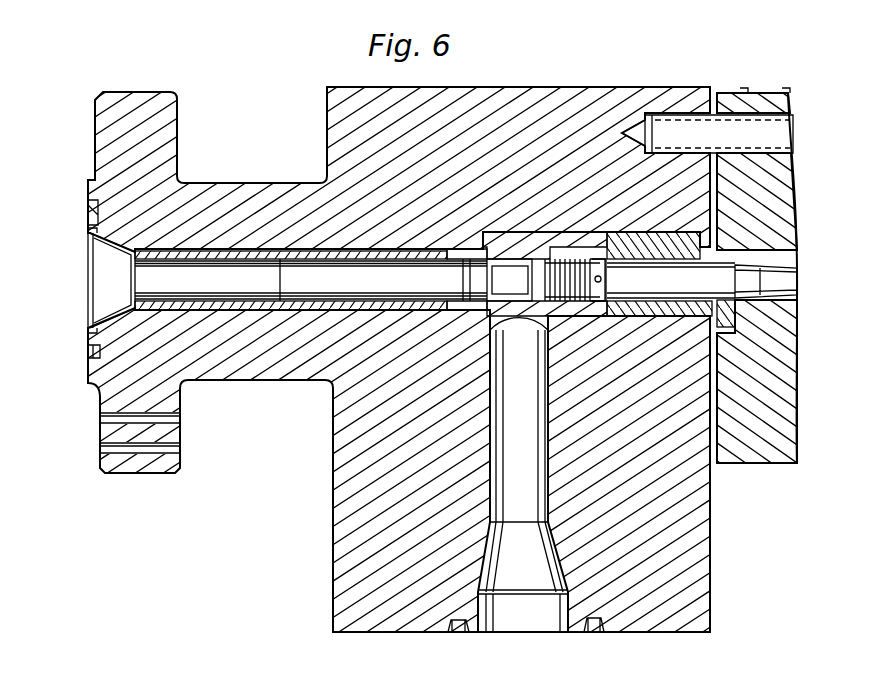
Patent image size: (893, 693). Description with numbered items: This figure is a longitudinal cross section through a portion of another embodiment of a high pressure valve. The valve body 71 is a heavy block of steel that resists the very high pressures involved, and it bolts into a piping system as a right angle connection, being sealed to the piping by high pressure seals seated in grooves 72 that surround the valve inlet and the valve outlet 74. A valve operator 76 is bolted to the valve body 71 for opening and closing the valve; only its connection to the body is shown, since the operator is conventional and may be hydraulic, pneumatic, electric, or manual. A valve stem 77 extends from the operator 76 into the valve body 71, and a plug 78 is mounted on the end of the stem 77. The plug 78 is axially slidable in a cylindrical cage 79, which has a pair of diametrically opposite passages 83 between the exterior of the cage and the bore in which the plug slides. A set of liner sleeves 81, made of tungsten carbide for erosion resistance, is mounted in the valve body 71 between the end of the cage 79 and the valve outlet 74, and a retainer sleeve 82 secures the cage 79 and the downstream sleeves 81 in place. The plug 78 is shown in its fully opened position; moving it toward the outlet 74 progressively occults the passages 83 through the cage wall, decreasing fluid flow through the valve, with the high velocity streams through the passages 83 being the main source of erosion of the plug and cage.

The valve body 71 is at (346, 474).
The grooves 72 is at (90, 352).
The valve outlet 74 is at (108, 270).
The valve operator 76 is at (786, 442).
The valve stem 77 is at (740, 265).
The plug 78 is at (575, 250).
The cylindrical cage 79 is at (600, 332).
The liner sleeves 81 is at (216, 312).
The retainer sleeve 82 is at (716, 356).
The passages 83 is at (507, 252).